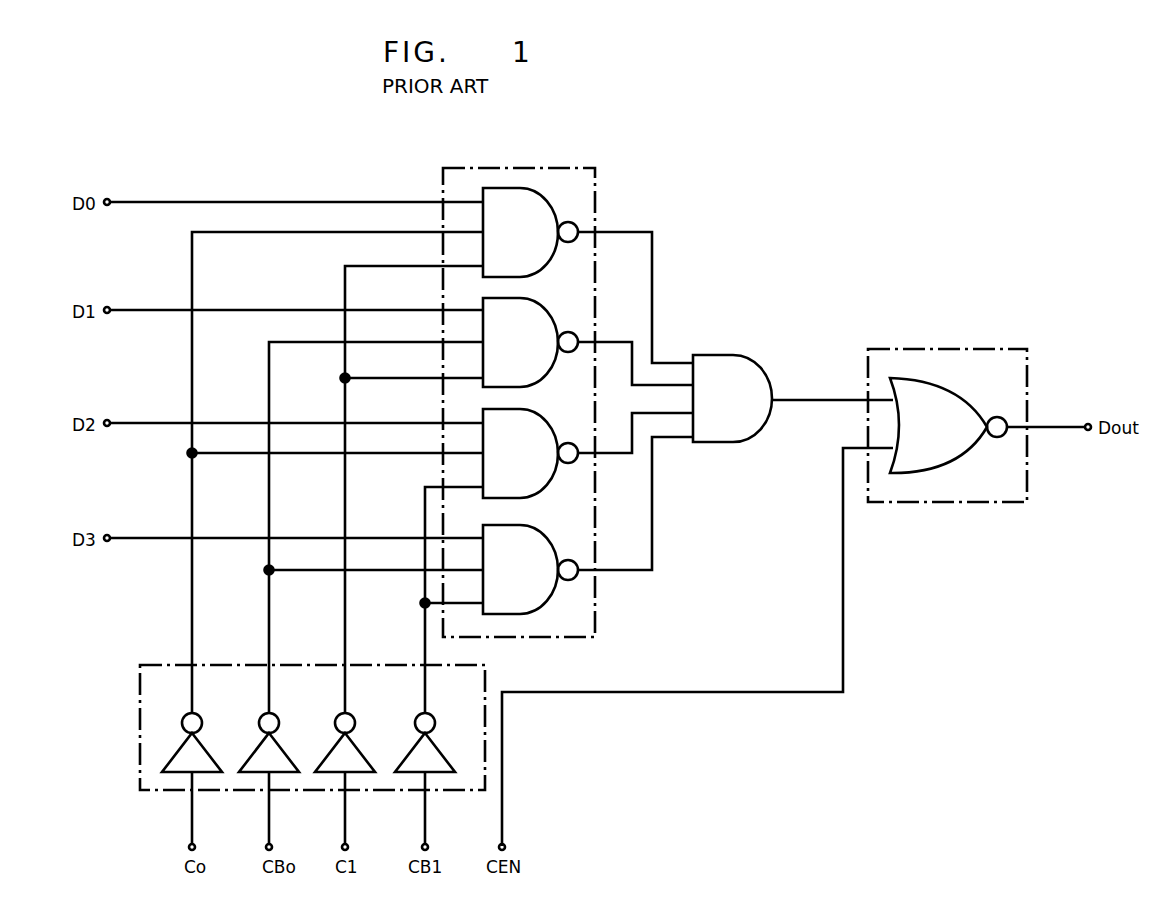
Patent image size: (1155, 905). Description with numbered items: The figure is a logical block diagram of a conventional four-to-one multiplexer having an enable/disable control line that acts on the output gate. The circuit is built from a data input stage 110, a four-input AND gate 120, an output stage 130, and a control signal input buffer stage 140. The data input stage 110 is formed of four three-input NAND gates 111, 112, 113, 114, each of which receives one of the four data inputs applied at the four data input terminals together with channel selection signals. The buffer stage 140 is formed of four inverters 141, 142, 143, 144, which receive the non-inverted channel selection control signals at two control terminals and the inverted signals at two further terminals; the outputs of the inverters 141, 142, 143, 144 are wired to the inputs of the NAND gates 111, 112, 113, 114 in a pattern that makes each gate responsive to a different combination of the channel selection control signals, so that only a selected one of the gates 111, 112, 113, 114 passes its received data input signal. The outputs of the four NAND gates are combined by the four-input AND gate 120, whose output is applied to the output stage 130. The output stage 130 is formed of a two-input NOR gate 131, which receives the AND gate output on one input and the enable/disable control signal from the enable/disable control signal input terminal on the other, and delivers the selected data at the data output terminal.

The data input stage 110 is at (600, 196).
The three-input NAND gate 111 is at (530, 232).
The three-input NAND gate 112 is at (530, 342).
The three-input NAND gate 113 is at (530, 453).
The three-input NAND gate 114 is at (530, 569).
The four-input AND gate 120 is at (732, 398).
The output stage 130 is at (948, 349).
The two-input NOR gate 131 is at (948, 425).
The control signal input buffer stage 140 is at (140, 700).
The inverter 141 is at (213, 756).
The inverter 142 is at (290, 756).
The inverter 143 is at (366, 756).
The inverter 144 is at (447, 756).